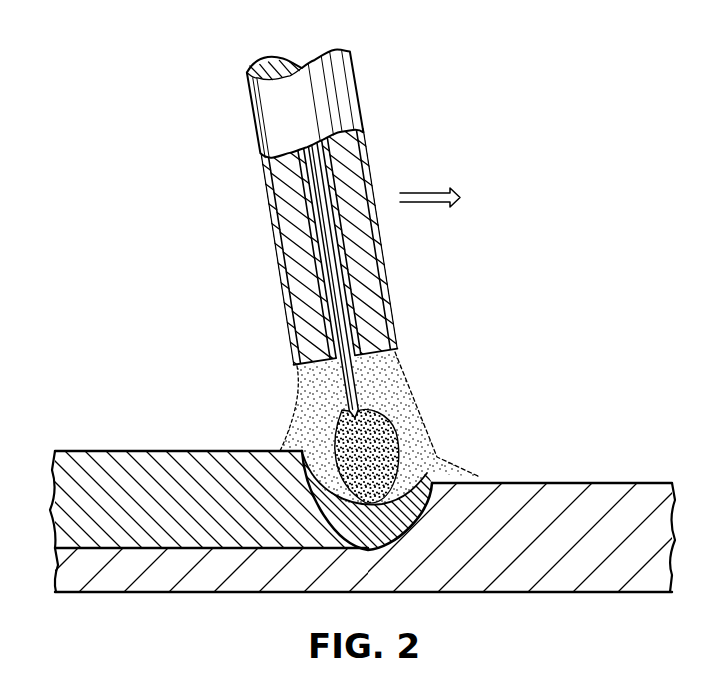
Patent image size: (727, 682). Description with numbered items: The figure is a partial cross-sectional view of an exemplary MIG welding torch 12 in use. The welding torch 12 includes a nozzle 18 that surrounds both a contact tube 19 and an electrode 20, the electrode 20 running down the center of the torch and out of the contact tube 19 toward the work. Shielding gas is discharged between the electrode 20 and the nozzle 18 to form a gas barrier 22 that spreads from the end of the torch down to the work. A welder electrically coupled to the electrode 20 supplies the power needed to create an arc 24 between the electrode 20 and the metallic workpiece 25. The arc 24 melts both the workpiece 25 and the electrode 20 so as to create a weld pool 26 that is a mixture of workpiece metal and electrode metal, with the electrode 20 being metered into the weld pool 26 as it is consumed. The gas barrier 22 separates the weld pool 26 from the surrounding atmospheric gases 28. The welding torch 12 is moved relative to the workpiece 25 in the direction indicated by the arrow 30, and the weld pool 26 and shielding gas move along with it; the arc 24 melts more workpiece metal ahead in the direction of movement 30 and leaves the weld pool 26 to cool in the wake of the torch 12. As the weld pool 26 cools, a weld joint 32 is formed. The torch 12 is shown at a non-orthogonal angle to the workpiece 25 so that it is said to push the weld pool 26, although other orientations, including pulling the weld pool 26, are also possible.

The welding torch 12 is at (317, 224).
The nozzle 18 is at (258, 140).
The contact tube 19 is at (326, 236).
The electrode 20 is at (333, 279).
The gas barrier 22 is at (388, 382).
The arc 24 is at (370, 437).
The workpiece 25 is at (615, 490).
The weld pool 26 is at (427, 473).
The atmospheric gases 28 is at (249, 418).
The arrow (direction of movement) 30 is at (433, 190).
The weld joint 32 is at (92, 456).